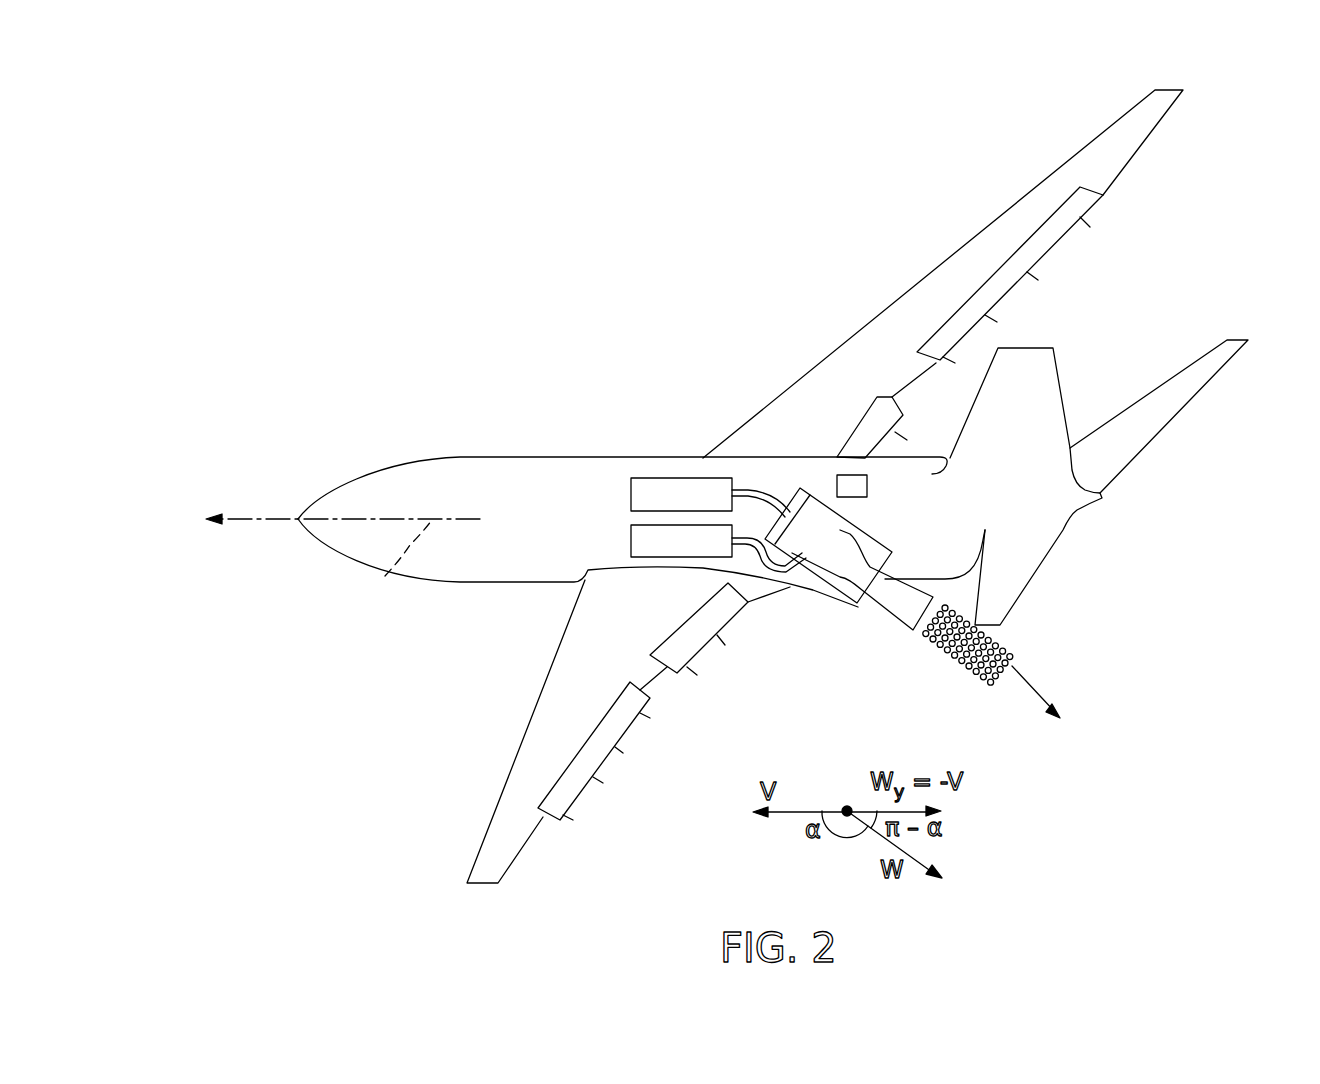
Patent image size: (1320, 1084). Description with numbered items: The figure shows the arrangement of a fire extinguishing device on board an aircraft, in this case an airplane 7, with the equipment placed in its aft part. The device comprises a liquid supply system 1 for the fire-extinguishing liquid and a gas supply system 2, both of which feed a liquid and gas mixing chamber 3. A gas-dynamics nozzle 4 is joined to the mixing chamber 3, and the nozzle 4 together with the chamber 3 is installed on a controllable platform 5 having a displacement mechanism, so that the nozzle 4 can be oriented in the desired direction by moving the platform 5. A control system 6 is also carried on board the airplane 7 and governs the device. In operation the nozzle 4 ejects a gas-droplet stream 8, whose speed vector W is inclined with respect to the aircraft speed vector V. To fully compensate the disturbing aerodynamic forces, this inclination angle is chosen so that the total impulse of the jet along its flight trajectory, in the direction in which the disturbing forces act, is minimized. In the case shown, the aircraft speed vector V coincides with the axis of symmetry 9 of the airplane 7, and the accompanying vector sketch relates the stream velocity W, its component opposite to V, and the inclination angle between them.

The liquid supply system 1 is at (710, 497).
The gas supply system 2 is at (718, 548).
The liquid and gas mixing chamber 3 is at (818, 555).
The gas-dynamics nozzle 4 is at (905, 596).
The controllable platform 5 is at (795, 503).
The control system 6 is at (855, 484).
The airplane 7 is at (418, 482).
The gas-droplet stream 8 is at (1009, 650).
The axis of symmetry 9 is at (386, 573).